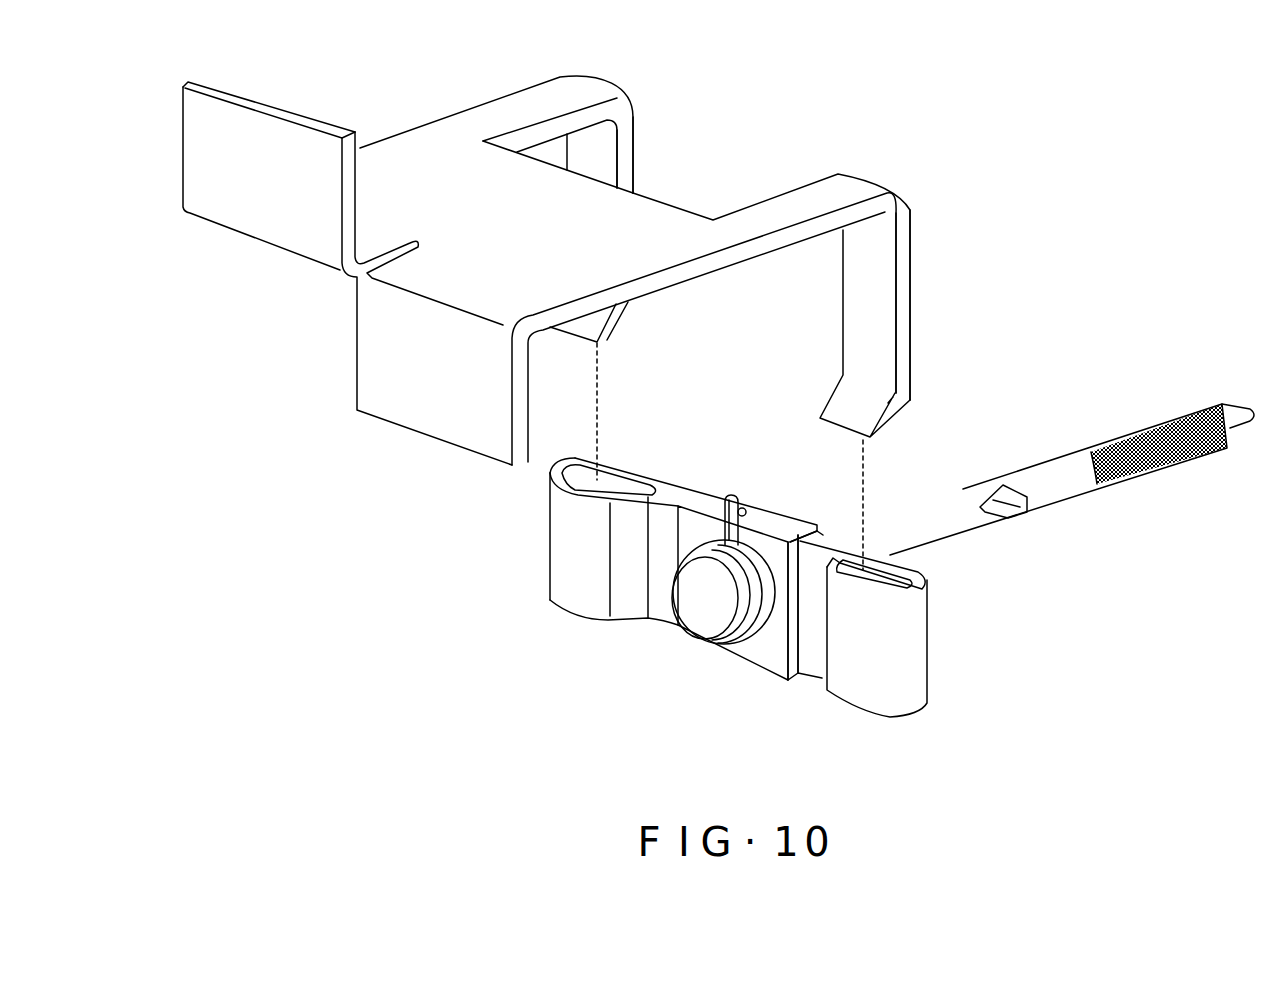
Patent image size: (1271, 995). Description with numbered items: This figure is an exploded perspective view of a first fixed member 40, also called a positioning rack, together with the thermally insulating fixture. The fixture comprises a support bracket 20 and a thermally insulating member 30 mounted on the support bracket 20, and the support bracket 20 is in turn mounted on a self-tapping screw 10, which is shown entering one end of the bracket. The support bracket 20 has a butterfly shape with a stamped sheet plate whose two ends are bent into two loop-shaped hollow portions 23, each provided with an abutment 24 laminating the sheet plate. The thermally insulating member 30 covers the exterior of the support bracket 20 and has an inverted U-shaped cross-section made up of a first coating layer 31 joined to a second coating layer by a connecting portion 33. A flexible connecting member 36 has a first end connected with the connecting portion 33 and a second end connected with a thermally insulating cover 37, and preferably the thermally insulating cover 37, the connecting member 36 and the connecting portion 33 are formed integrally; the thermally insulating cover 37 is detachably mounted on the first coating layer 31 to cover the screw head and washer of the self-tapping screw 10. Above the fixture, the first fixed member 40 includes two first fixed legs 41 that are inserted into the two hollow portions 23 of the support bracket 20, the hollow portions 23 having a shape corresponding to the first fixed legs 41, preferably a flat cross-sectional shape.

The self-tapping screw 10 is at (1060, 477).
The support bracket 20 is at (682, 561).
The hollow portion 23 is at (612, 480).
The abutment 24 is at (680, 490).
The thermally insulating member 30 is at (727, 582).
The first coating layer 31 is at (771, 660).
The connecting portion 33 is at (787, 530).
The connecting member 36 is at (733, 503).
The thermally insulating cover 37 is at (708, 617).
The first fixed member 40 is at (410, 155).
The first fixed leg 41 is at (628, 157).